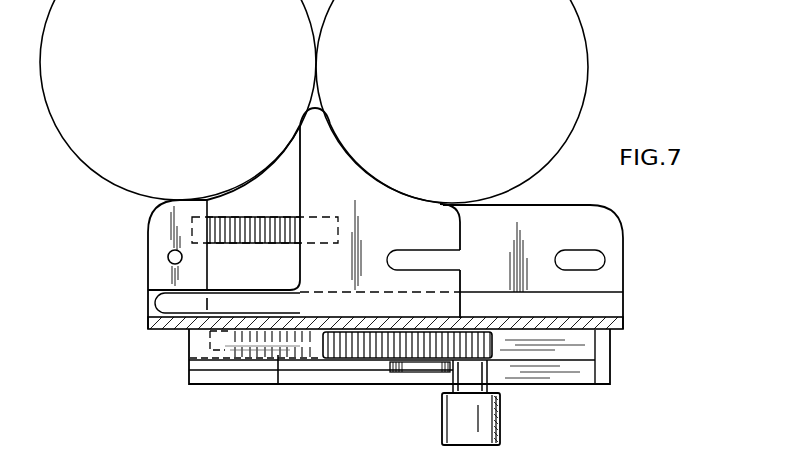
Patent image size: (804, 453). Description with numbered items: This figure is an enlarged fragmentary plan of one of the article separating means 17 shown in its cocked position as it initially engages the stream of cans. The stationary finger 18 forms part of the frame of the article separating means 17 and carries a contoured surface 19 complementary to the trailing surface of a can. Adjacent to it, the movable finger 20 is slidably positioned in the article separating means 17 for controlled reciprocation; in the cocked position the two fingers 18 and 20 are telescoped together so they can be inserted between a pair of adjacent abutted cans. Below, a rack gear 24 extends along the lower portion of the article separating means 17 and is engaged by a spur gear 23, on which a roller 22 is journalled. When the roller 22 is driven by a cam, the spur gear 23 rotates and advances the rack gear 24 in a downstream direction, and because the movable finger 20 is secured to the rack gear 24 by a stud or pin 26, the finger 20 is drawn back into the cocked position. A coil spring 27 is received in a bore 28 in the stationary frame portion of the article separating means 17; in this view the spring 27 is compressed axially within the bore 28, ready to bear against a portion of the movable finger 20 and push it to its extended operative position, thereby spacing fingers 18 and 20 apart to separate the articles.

The article separating means 17 is at (147, 257).
The finger 18 is at (289, 165).
The surface 19 is at (258, 175).
The movable finger 20 is at (333, 150).
The roller 22 is at (492, 420).
The spur gear 23 is at (418, 350).
The rack gear 24 is at (277, 387).
The stud or pin 26 is at (210, 332).
The coil spring 27 is at (240, 217).
The bore 28 is at (192, 236).